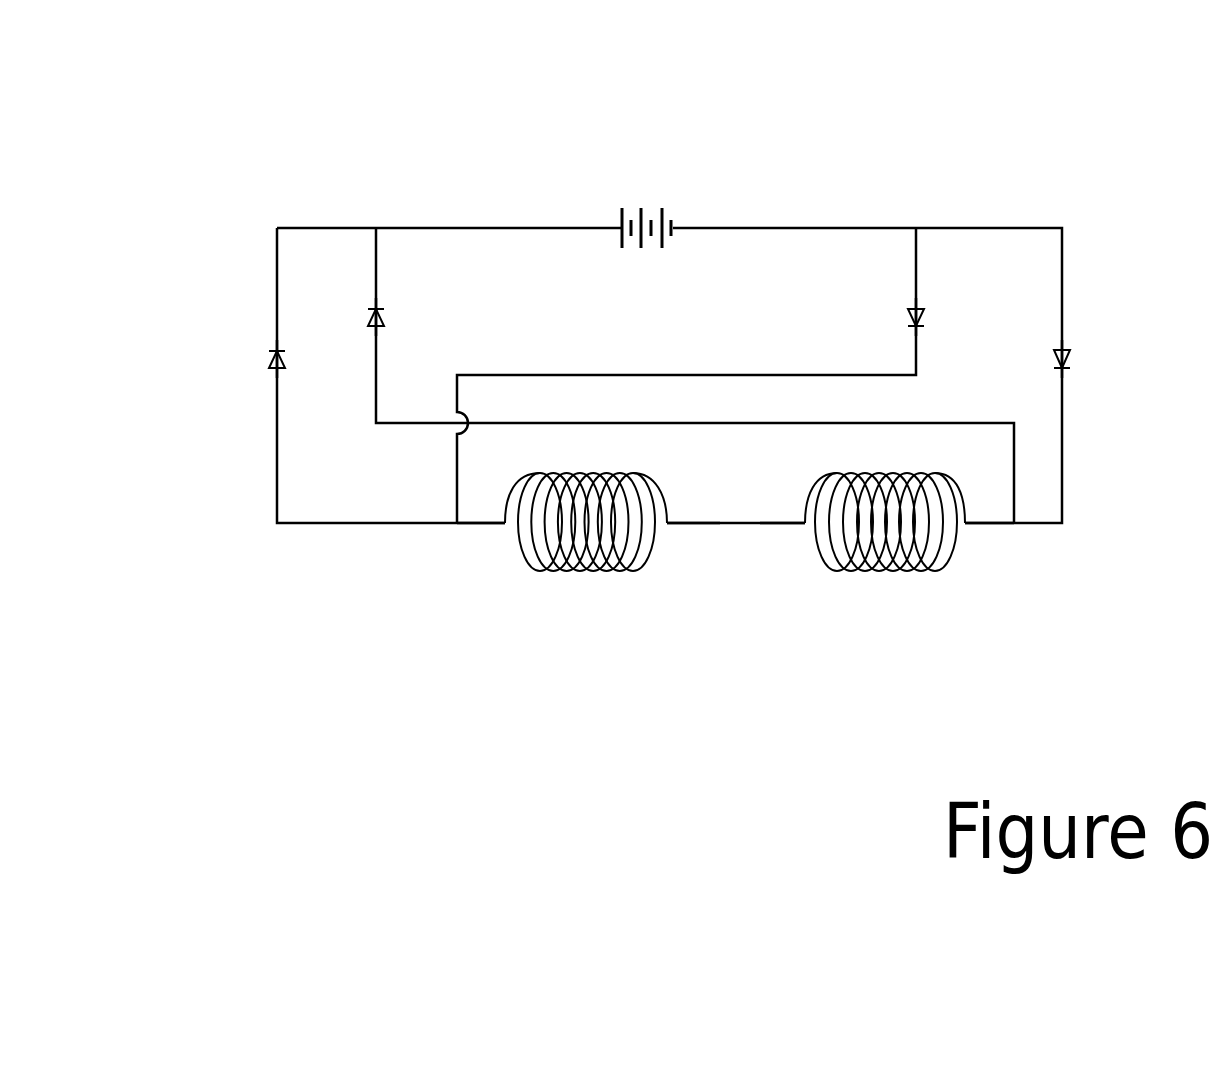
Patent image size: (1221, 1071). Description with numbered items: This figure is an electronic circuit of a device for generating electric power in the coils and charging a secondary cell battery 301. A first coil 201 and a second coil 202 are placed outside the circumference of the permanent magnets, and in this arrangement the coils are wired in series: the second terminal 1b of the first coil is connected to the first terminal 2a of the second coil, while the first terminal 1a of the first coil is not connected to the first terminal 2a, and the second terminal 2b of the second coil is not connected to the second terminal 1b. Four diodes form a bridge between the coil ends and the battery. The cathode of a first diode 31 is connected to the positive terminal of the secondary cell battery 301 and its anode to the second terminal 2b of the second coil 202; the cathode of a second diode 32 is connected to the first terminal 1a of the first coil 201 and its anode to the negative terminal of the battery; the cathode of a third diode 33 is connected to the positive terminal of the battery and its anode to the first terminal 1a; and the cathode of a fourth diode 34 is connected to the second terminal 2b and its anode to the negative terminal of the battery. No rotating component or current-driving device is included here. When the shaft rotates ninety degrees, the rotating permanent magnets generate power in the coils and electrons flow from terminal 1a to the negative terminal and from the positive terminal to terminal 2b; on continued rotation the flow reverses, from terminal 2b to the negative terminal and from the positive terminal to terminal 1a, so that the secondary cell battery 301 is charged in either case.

The secondary cell battery 301 is at (645, 195).
The first diode 31 is at (395, 312).
The second diode 32 is at (935, 311).
The third diode 33 is at (257, 357).
The fourth diode 34 is at (1082, 357).
The first coil 201 is at (587, 580).
The second coil 202 is at (885, 578).
The first terminal of the first coil 1a is at (481, 547).
The second terminal of the first coil 1b is at (692, 547).
The first terminal of the second coil 2a is at (782, 548).
The second terminal of the second coil 2b is at (989, 548).